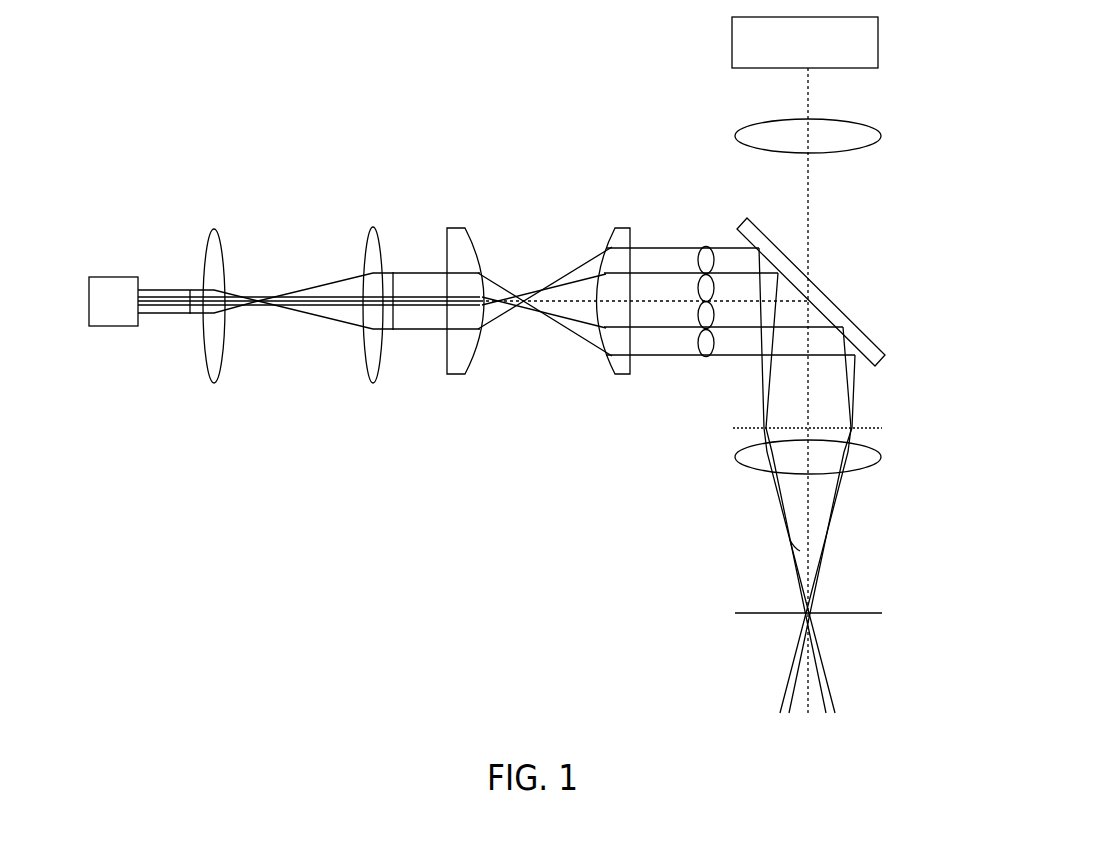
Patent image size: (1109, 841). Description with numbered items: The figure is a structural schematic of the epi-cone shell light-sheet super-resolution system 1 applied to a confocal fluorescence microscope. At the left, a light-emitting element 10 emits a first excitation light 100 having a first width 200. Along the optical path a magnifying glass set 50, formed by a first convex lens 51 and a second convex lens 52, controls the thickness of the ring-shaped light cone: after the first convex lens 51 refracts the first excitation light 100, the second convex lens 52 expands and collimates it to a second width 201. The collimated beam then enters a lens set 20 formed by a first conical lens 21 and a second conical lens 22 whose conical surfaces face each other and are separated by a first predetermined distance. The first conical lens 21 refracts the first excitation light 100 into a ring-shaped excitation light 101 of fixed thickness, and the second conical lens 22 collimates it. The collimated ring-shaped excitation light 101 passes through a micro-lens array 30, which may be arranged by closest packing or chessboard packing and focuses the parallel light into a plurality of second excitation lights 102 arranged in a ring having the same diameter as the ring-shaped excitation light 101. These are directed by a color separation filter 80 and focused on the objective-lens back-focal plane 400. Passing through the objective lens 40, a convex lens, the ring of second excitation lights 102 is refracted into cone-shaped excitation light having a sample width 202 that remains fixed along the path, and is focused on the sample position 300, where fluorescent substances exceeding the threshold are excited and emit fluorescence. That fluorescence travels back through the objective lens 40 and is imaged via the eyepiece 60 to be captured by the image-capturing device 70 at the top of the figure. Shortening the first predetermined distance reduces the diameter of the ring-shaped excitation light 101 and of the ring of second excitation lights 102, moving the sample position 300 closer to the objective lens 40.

The epi-cone shell light-sheet super-resolution system 1 is at (192, 117).
The light-emitting element 10 is at (131, 276).
The first excitation light 100 is at (171, 313).
The first width 200 is at (190, 292).
The magnifying glass set 50 is at (293, 255).
The first convex lens 51 is at (224, 254).
The second convex lens 52 is at (362, 259).
The second width 201 is at (397, 323).
The lens set 20 is at (538, 255).
The first conical lens 21 is at (465, 245).
The second conical lens 22 is at (612, 242).
The ring-shaped excitation light 101 is at (558, 322).
The second excitation lights 102 is at (729, 251).
The micro-lens array 30 is at (697, 332).
The color separation filter 80 is at (864, 322).
The image-capturing device 70 is at (880, 30).
The eyepiece 60 is at (880, 128).
The objective-lens back-focal plane 400 is at (858, 427).
The objective lens 40 is at (872, 467).
The sample width 202 is at (795, 552).
The sample position 300 is at (805, 615).